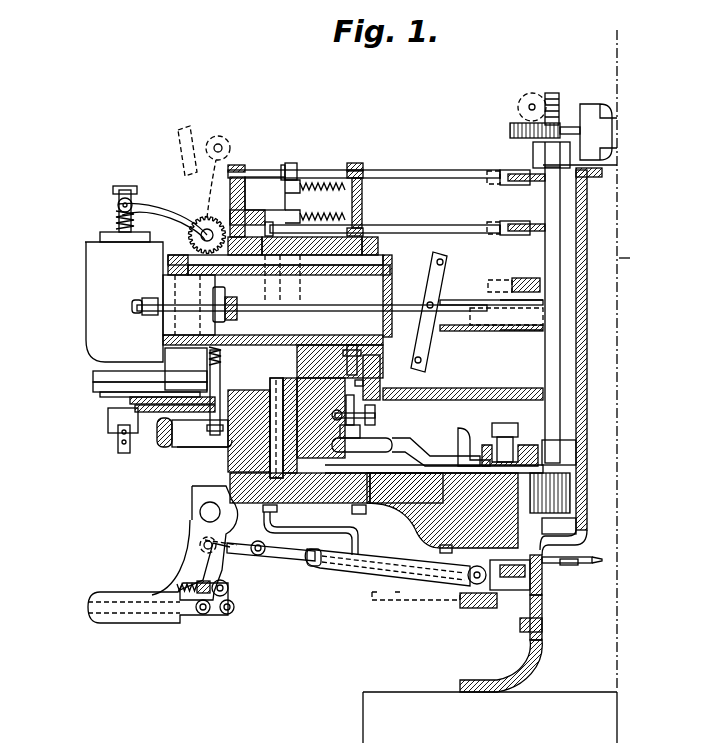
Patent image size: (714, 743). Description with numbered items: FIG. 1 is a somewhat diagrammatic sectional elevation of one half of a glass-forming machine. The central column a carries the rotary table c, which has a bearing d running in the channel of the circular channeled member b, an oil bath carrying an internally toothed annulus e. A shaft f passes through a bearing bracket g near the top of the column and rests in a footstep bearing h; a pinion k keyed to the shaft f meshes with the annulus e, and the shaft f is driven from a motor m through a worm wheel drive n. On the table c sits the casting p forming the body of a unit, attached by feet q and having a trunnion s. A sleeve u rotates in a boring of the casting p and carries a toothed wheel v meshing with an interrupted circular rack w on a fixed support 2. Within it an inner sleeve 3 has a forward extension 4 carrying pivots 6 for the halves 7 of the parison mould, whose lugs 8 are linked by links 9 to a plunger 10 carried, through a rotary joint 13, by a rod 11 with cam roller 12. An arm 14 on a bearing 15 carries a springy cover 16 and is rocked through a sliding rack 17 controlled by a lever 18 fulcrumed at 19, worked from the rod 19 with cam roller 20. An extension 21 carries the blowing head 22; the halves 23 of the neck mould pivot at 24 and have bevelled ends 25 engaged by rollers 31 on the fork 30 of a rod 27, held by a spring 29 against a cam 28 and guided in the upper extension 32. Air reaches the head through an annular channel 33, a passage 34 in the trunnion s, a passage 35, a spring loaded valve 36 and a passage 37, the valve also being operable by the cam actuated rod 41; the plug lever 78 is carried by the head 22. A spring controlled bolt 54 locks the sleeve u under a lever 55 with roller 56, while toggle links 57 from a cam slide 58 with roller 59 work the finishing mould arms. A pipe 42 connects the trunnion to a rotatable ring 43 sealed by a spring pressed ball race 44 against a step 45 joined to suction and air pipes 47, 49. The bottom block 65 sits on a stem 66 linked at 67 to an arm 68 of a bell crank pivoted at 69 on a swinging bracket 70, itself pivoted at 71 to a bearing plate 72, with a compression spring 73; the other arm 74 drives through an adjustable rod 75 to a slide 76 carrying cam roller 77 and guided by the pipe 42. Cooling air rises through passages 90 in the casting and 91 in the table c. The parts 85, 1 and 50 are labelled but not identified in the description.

The worm wheel 85 is at (532, 103).
The motor m is at (612, 108).
The worm wheel drive n is at (512, 128).
The bearing bracket g is at (533, 155).
The shaft f is at (560, 205).
The cam roller 20 is at (637, 252).
The central column a is at (589, 282).
The upper extension of casing 32 is at (240, 166).
The roller 31 is at (283, 170).
The fork 30 is at (293, 167).
The longitudinally sliding rack 17 is at (310, 258).
The spring pressed cam actuated rod 41 is at (402, 177).
The spring 29 is at (358, 215).
The rod 27 is at (402, 225).
The cam 28 is at (518, 222).
The cover 16 is at (103, 231).
The arm 14 is at (172, 208).
The bearing 15 is at (240, 220).
The annular channel 33 is at (285, 214).
The forward extension 4 is at (178, 262).
The lugs 8 is at (148, 296).
The halves of parison mould 7 is at (90, 314).
The links 9 is at (172, 312).
The rotary joint 13 is at (236, 300).
The sleeve 3 is at (293, 273).
The rod 11 is at (308, 306).
The casting p is at (315, 362).
The plunger 10 is at (228, 318).
The sleeve u is at (302, 340).
The spring controlled bolt 54 is at (347, 348).
The lever 18 is at (440, 296).
The rod 19 is at (472, 295).
The cam roller 12 is at (463, 332).
The toothed wheel v is at (379, 246).
The interrupted circular rack w is at (382, 383).
The fixed support 2 is at (475, 398).
The pivot 24 is at (110, 378).
The bevelled surface 25 is at (205, 378).
The pivots 6 is at (213, 382).
The halves of neck mould 23 is at (103, 388).
The spring loaded valve 36 is at (105, 404).
The blowing head 22 is at (112, 420).
The lever 78 is at (123, 452).
The extension 21 is at (147, 414).
The passage 37 is at (160, 418).
The body 1 is at (197, 437).
The passage 34 is at (228, 455).
The passage 35 is at (230, 483).
The trunnion s is at (270, 472).
The roller 56 is at (376, 412).
The feet q is at (365, 438).
The lever 55 is at (418, 432).
The toggle links 57 is at (466, 428).
The cam slide 58 is at (507, 440).
The roller 59 is at (512, 445).
The bearing d is at (545, 450).
The internally toothed annulus e is at (533, 480).
The circular channeled member b is at (580, 490).
The pinion k is at (588, 507).
The footstep bearing h is at (580, 548).
The passages 90 is at (598, 558).
The pipe 47 is at (600, 563).
The pipe 49 is at (578, 565).
The rotatable ring 43 is at (542, 578).
The spring pressed ball race 44 is at (542, 600).
The bolt 50 is at (535, 620).
The step 45 is at (505, 567).
The slide 76 is at (452, 558).
The passages 91 is at (368, 548).
The pipe 42 is at (270, 556).
The rotary table c is at (322, 475).
The bearing plate 72 is at (345, 478).
The rod 75 is at (341, 572).
The cam roller 77 is at (460, 600).
The pivot 71 is at (199, 512).
The arm of bell crank lever 74 is at (205, 540).
The pivot 69 is at (200, 545).
The compression spring 73 is at (190, 585).
The bottom mould 65 is at (105, 592).
The swinging bracket 70 is at (157, 595).
The stem 66 is at (200, 615).
The link 67 is at (224, 615).
The arm of bell crank lever 68 is at (228, 592).